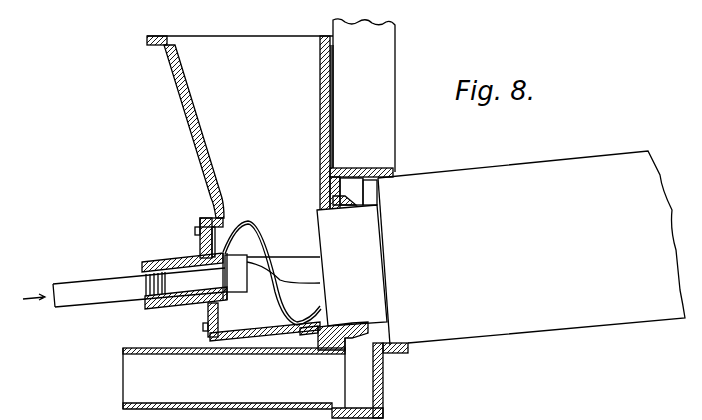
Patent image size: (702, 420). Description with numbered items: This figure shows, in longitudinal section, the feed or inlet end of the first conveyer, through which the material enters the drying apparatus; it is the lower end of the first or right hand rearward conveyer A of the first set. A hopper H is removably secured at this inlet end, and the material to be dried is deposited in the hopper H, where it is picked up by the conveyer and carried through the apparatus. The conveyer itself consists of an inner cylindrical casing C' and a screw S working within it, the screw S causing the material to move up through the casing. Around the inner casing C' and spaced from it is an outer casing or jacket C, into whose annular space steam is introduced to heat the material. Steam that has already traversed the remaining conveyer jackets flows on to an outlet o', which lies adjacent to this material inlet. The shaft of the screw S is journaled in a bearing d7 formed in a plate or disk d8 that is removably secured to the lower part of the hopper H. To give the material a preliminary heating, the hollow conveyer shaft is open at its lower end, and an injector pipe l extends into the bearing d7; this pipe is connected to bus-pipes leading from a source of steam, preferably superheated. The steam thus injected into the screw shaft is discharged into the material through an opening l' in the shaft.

The hopper H is at (270, 127).
The rearward conveyer of the first set A is at (531, 248).
The outer casing or jacket C is at (496, 152).
The inner cylindrical casing C' is at (352, 265).
The steam outlet O' is at (218, 378).
The bearing d7 is at (165, 256).
The plate or disk d8 is at (201, 220).
The injector pipe l is at (135, 278).
The opening in the shaft l' is at (283, 270).
The screw S is at (289, 258).